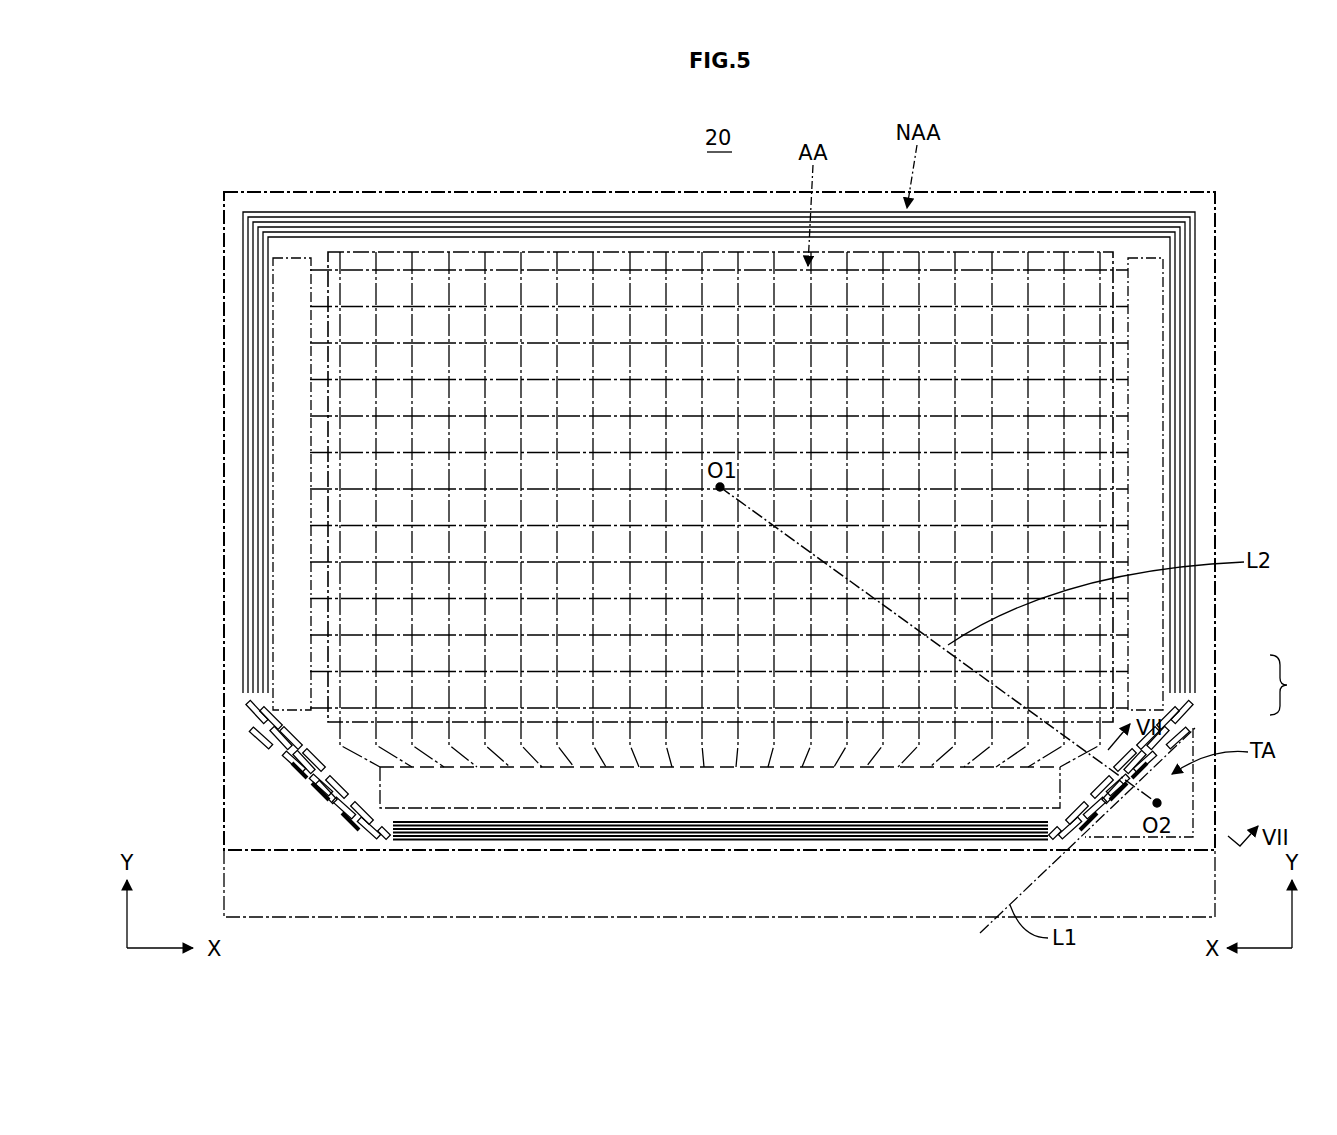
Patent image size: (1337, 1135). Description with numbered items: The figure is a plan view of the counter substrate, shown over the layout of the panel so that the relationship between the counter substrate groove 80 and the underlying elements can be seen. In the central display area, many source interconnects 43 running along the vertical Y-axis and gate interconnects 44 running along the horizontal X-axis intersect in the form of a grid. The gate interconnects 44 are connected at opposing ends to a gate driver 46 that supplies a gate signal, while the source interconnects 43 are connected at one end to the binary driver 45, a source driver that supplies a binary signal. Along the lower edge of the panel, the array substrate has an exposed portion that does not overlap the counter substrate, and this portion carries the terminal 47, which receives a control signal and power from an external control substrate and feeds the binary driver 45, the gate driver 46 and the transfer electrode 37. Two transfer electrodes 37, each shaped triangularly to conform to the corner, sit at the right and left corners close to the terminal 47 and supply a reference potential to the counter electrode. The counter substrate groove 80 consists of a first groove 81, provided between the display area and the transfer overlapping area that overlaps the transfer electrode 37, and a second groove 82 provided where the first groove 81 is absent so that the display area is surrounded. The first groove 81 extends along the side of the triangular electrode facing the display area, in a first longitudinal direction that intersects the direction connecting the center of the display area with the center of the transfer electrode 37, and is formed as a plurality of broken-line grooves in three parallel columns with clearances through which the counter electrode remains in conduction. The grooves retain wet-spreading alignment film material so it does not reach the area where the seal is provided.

The transfer electrode 37 is at (1172, 797).
The source interconnects 43 is at (452, 292).
The gate interconnects 44 is at (396, 270).
The binary driver 45 is at (835, 790).
The gate driver 46 is at (1141, 278).
The terminal 47 is at (1185, 889).
The counter substrate groove 80 is at (1293, 685).
The first groove 81 is at (1196, 712).
The second groove 82 is at (1197, 655).